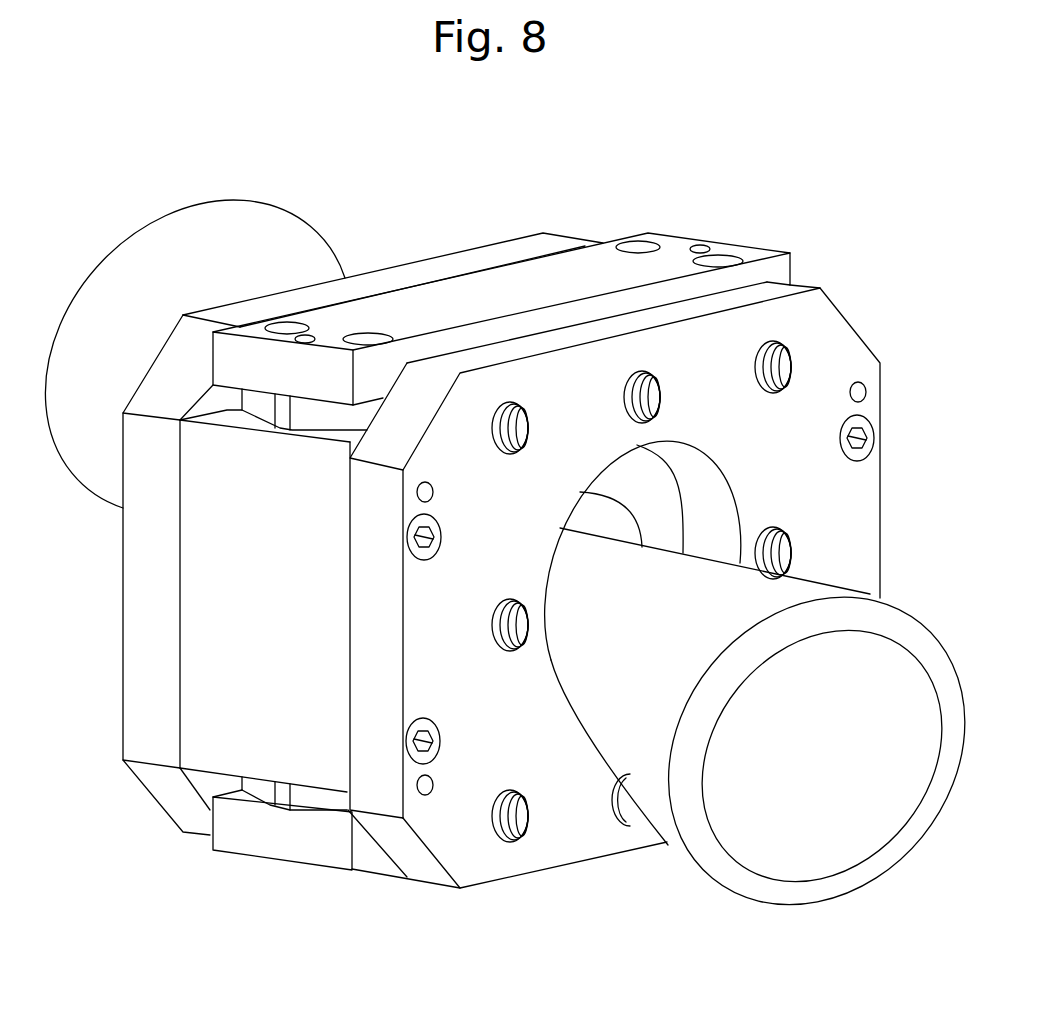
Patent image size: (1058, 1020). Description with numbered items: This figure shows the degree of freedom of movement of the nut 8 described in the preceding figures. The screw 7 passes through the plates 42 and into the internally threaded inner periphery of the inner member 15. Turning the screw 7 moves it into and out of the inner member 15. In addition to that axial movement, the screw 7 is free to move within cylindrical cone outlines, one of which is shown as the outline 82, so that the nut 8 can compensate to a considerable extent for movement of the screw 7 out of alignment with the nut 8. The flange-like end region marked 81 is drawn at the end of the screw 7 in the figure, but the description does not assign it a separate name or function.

The screw 7 is at (650, 594).
The nut 8 is at (889, 291).
The inner member 15 is at (627, 522).
The plates 42 is at (494, 254).
The flange 81 is at (768, 889).
The cylindrical cone outline 82 is at (293, 227).